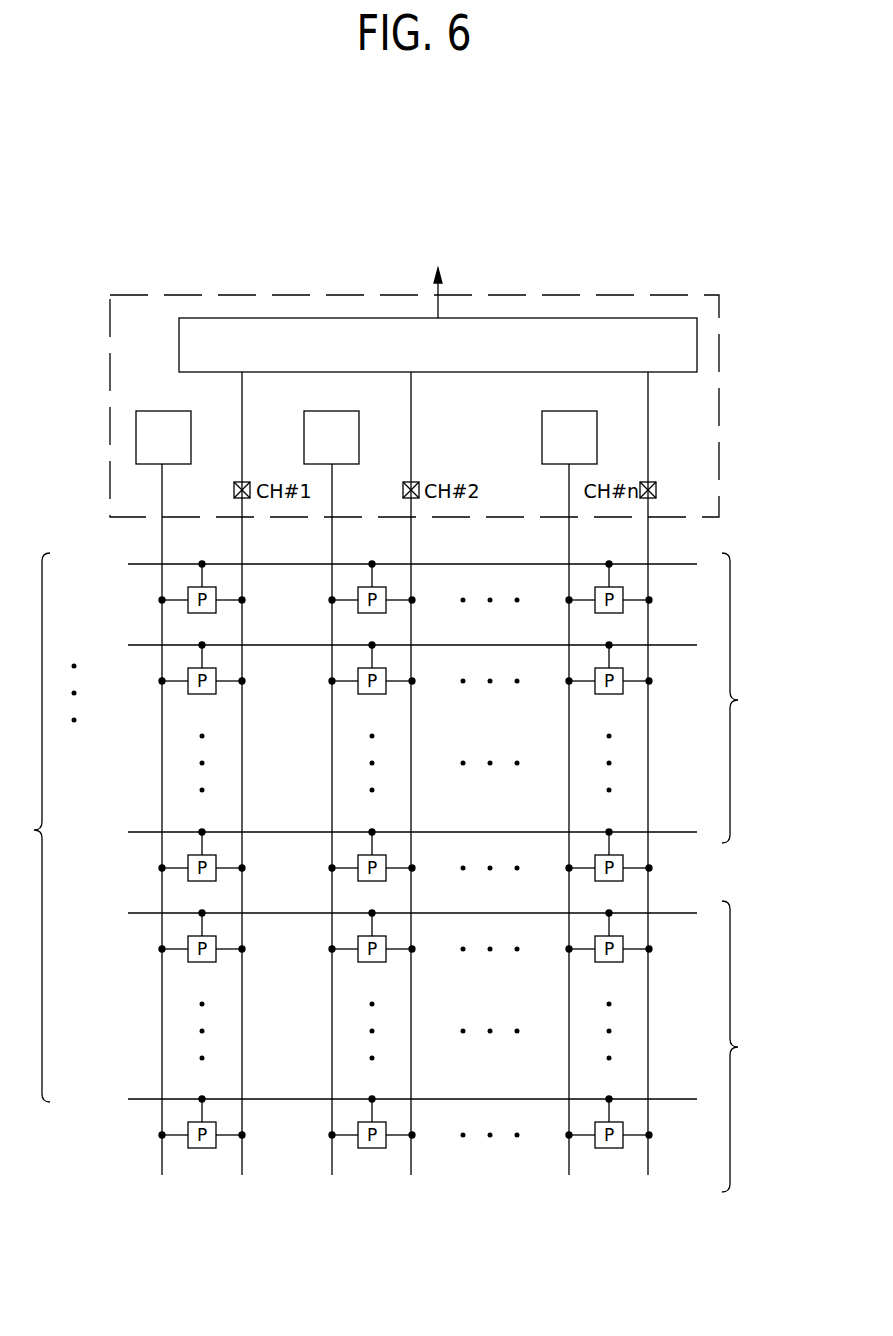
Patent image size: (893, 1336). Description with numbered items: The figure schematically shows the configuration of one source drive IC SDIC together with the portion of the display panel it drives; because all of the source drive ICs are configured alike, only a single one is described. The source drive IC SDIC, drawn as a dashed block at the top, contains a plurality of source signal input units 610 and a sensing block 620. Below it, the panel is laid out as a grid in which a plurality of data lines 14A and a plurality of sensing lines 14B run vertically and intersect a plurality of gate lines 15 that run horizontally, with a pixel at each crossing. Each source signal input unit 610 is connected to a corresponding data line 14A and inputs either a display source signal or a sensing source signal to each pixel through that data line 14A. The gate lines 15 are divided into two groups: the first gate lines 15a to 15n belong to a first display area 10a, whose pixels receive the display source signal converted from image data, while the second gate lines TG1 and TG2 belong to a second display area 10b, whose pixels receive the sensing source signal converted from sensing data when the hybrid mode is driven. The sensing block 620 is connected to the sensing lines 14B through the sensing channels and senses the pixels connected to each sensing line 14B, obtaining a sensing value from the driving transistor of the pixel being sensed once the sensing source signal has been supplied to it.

The sensing block 620 is at (456, 358).
The source signal input unit 610 is at (181, 450).
The source drive IC SDIC is at (720, 355).
The data line 14A is at (569, 1157).
The sensing line 14B is at (648, 1157).
The gate lines 15 is at (42, 827).
The first gate line 15a is at (130, 564).
The first gate line 15n is at (130, 832).
The second gate line TG1 is at (130, 913).
The second gate line TG2 is at (130, 1099).
The first display area 10a is at (469, 698).
The second display area 10b is at (469, 1046).